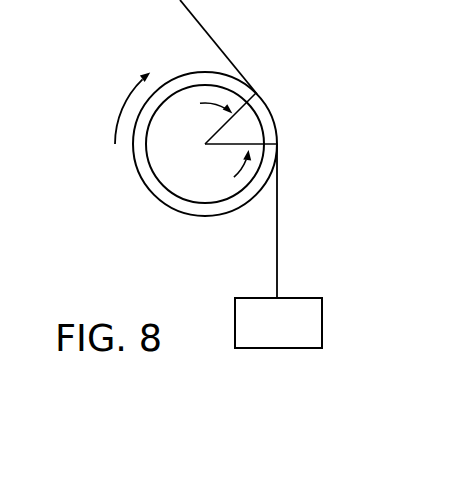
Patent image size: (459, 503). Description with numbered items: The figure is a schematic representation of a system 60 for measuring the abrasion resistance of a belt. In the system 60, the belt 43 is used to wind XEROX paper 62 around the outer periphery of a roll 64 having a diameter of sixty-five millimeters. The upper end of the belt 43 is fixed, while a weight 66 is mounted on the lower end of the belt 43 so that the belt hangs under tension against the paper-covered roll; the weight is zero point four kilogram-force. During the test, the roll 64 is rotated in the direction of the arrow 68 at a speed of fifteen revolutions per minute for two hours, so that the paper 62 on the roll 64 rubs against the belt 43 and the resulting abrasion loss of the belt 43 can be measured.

The system 60 is at (342, 179).
The XEROX paper 62 is at (203, 216).
The roll 64 is at (187, 88).
The belt 43 is at (277, 253).
The weight 66 is at (302, 327).
The arrow 68 is at (117, 127).